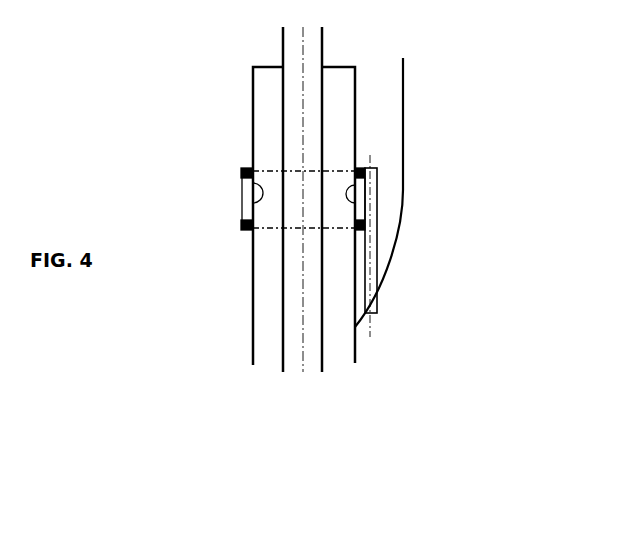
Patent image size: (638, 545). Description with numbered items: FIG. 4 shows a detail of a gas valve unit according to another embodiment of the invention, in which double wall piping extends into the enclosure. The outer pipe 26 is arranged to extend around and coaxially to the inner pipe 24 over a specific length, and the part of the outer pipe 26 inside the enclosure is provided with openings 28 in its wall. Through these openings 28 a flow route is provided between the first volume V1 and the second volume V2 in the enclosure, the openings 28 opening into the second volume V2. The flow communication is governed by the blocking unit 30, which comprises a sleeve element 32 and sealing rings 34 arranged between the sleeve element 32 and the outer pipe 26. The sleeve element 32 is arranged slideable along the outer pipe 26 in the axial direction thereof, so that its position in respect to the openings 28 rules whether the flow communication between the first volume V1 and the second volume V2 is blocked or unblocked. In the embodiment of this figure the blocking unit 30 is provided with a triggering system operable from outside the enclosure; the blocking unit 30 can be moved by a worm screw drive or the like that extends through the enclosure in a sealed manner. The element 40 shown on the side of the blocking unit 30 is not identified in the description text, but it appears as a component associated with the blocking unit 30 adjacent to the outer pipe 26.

The inner pipe 24 is at (323, 353).
The outer pipe 26 is at (357, 343).
The openings 28 is at (357, 203).
The blocking unit 30 is at (376, 170).
The sleeve element 32 is at (240, 217).
The sealing rings 34 is at (240, 172).
The pin 40 is at (369, 325).
The first volume V1 is at (268, 327).
The second volume V2 is at (148, 142).